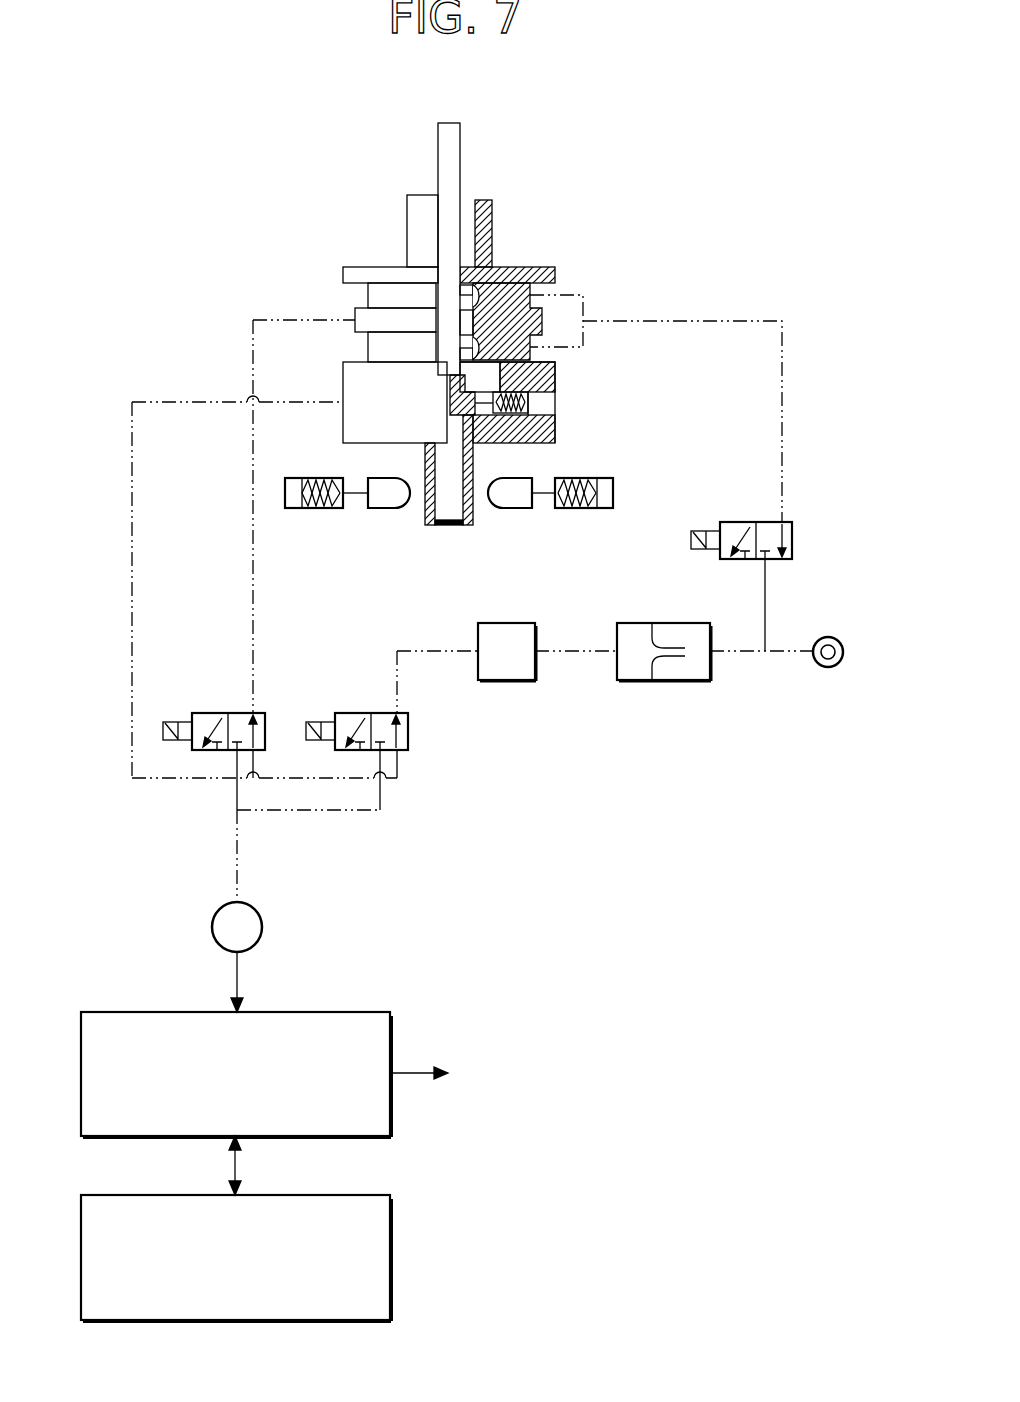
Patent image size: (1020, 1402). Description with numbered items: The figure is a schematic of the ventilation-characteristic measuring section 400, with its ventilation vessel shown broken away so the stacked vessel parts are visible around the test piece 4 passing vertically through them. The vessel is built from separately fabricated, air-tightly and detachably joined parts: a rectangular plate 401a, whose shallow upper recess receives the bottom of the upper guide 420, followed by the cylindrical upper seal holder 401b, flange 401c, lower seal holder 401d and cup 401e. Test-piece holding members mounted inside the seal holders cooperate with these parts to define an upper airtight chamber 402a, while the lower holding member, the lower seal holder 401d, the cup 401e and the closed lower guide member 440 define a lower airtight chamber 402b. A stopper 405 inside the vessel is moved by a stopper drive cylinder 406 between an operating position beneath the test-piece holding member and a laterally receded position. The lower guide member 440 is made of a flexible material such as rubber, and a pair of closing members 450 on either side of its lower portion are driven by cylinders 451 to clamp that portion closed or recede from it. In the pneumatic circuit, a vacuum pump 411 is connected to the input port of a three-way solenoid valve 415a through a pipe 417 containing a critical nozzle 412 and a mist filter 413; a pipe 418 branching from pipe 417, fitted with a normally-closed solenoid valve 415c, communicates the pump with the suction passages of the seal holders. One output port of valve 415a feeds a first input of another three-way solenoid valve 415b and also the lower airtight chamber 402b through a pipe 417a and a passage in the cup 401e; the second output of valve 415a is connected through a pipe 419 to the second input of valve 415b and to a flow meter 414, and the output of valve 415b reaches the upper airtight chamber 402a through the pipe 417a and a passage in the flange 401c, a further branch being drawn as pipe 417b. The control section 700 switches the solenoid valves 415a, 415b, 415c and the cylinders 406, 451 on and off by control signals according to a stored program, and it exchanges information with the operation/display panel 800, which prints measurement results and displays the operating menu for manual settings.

The rod 4 is at (448, 143).
The ventilation-characteristic measuring section 400 is at (566, 286).
The plate 401a is at (377, 270).
The upper seal holder 401b is at (368, 296).
The flange 401c is at (370, 320).
The lower seal holder 401d is at (380, 360).
The cup 401e is at (358, 383).
The upper airtight chamber 402a is at (468, 318).
The lower airtight chamber 402b is at (488, 377).
The stopper 405 is at (452, 400).
The stopper drive cylinder 406 is at (538, 405).
The vacuum pump 411 is at (828, 637).
The critical nozzle 412 is at (672, 681).
The mist filter 413 is at (514, 681).
The flow meter 414 is at (262, 927).
The three-way solenoid valve 415a is at (380, 713).
The three-way solenoid valve 415b is at (237, 713).
The normally-closed solenoid valve 415c is at (765, 522).
The pipe 417 is at (786, 655).
The pipe 417a is at (250, 523).
The air line 417b is at (147, 788).
The pipe 418 is at (782, 412).
The pipe 419 is at (235, 865).
The upper guide 420 is at (492, 218).
The lower guide member 440 is at (478, 517).
The closing members 450 is at (385, 510).
The cylinders 451 is at (300, 510).
The control section 700 is at (392, 1028).
The operation/display panel 800 is at (390, 1224).